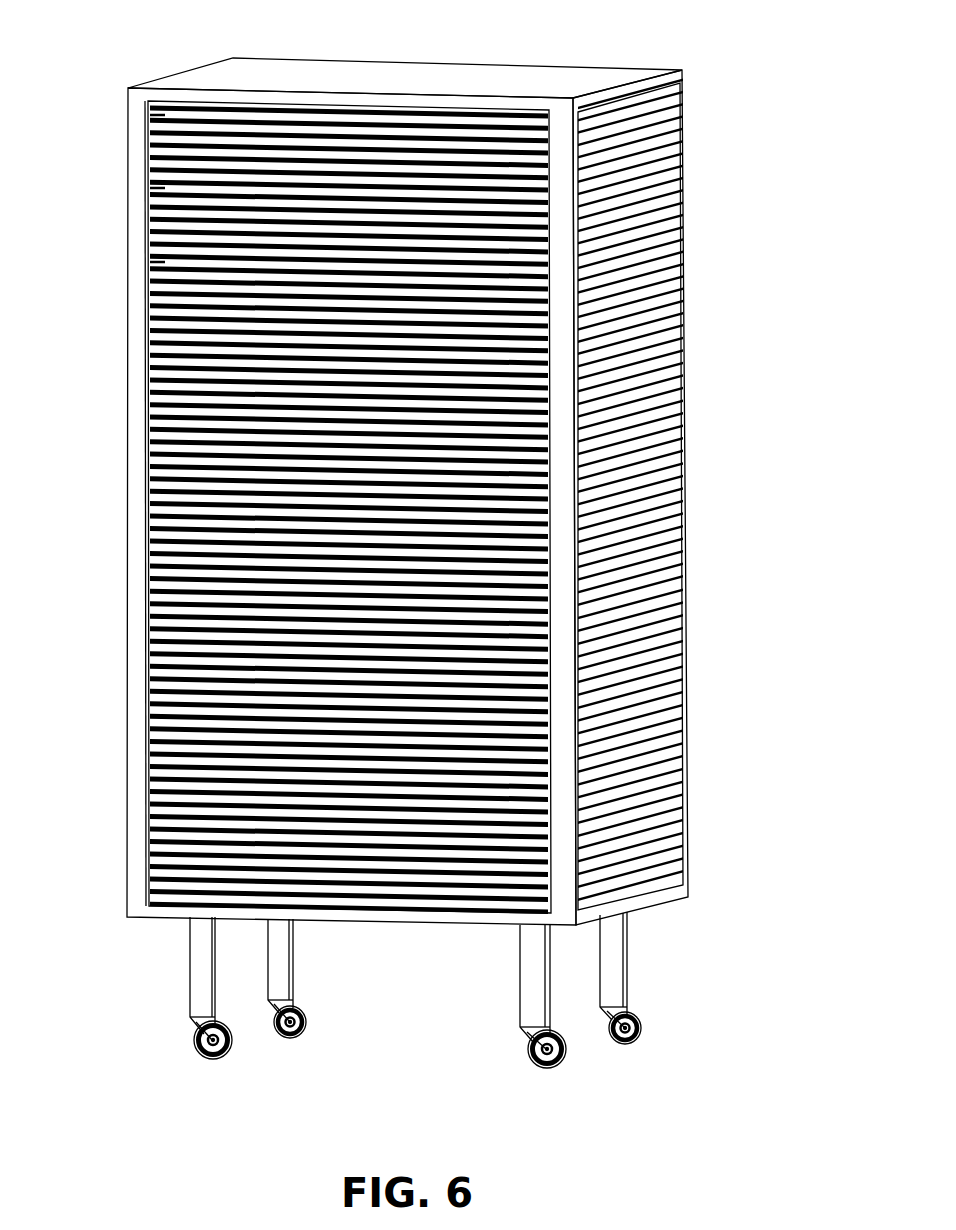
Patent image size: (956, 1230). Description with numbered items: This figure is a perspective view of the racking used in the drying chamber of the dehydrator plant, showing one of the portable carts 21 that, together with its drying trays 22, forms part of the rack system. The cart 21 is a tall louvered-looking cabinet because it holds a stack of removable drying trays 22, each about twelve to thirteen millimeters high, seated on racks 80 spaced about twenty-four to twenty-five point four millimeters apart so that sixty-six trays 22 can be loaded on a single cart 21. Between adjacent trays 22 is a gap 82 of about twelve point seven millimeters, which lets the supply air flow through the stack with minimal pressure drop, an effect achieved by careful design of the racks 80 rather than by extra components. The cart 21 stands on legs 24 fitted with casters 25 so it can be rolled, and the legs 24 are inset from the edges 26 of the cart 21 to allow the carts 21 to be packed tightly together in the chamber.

The portable cart 21 is at (718, 89).
The drying tray 22 is at (263, 283).
The leg 24 is at (197, 973).
The caster 25 is at (228, 1054).
The edge 26 is at (565, 918).
The rack 80 is at (150, 112).
The gap 82 is at (160, 117).